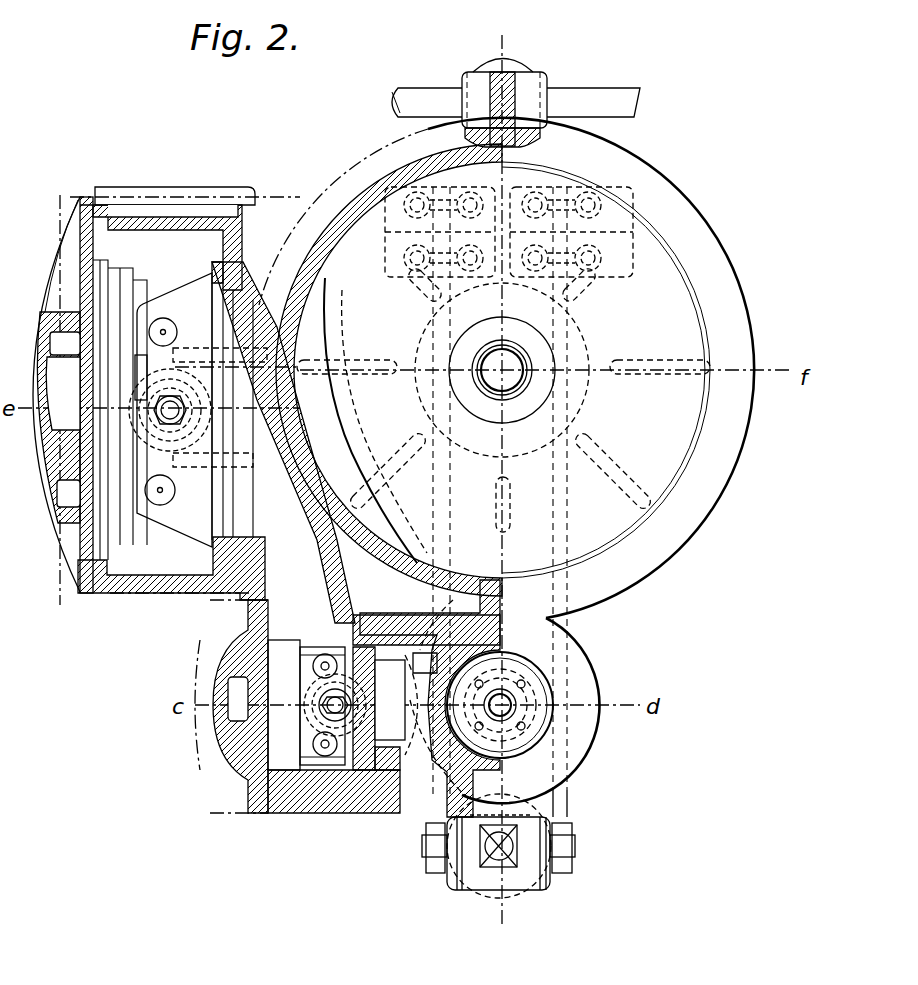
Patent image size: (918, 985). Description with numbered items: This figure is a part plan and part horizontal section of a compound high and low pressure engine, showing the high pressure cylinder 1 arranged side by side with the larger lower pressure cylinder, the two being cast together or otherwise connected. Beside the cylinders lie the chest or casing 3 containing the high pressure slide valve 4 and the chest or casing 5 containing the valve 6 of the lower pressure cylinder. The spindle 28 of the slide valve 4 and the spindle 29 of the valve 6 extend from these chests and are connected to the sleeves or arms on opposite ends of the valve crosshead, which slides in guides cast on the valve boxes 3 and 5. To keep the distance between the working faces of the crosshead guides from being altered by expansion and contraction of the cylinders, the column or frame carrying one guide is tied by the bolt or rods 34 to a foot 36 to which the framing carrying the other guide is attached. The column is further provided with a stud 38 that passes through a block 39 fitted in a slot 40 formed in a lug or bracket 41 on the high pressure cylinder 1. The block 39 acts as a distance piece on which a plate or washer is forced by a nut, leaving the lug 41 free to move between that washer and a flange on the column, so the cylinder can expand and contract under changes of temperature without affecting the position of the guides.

The high pressure cylinder 1 is at (564, 752).
The chest or casing 3 is at (310, 773).
The high pressure slide valve 4 is at (347, 755).
The chest or casing 5 is at (197, 253).
The valve 6 is at (185, 298).
The spindle 28 is at (342, 762).
The spindle 29 is at (148, 430).
The bolt or rods 34 is at (560, 800).
The foot 36 is at (600, 232).
The stud 38 is at (480, 868).
The block 39 is at (507, 868).
The slot 40 is at (465, 870).
The lug or bracket 41 is at (487, 884).